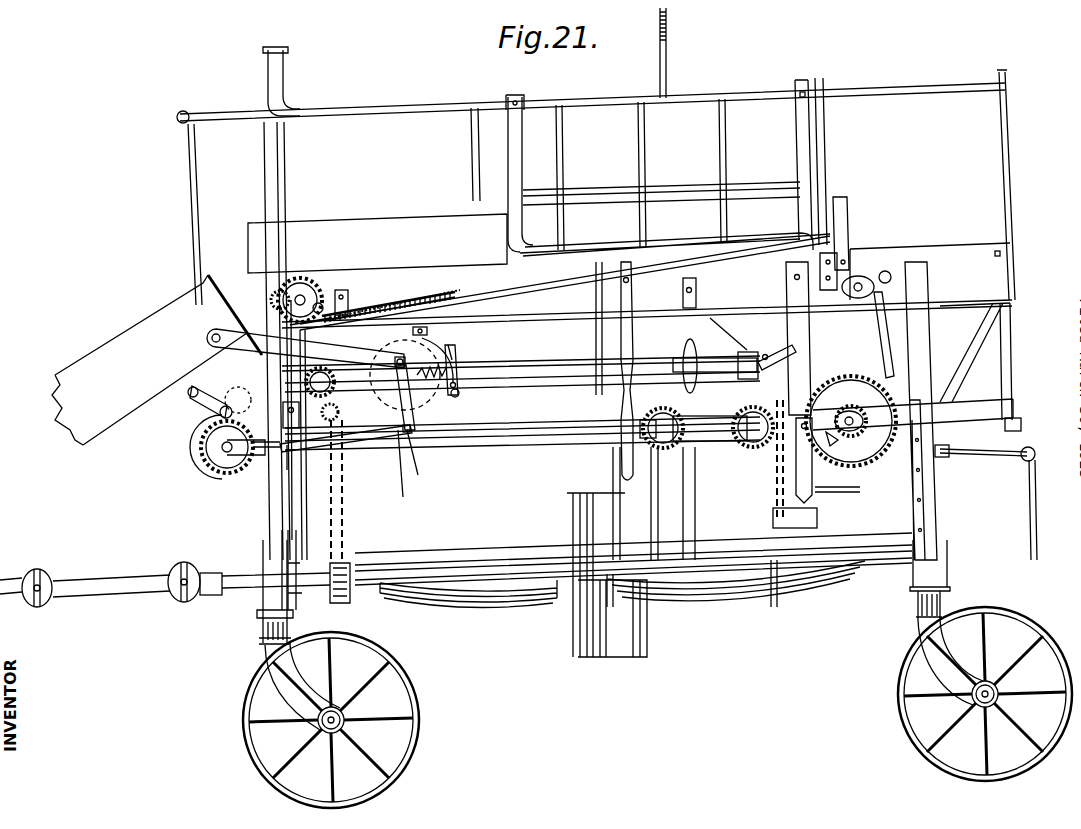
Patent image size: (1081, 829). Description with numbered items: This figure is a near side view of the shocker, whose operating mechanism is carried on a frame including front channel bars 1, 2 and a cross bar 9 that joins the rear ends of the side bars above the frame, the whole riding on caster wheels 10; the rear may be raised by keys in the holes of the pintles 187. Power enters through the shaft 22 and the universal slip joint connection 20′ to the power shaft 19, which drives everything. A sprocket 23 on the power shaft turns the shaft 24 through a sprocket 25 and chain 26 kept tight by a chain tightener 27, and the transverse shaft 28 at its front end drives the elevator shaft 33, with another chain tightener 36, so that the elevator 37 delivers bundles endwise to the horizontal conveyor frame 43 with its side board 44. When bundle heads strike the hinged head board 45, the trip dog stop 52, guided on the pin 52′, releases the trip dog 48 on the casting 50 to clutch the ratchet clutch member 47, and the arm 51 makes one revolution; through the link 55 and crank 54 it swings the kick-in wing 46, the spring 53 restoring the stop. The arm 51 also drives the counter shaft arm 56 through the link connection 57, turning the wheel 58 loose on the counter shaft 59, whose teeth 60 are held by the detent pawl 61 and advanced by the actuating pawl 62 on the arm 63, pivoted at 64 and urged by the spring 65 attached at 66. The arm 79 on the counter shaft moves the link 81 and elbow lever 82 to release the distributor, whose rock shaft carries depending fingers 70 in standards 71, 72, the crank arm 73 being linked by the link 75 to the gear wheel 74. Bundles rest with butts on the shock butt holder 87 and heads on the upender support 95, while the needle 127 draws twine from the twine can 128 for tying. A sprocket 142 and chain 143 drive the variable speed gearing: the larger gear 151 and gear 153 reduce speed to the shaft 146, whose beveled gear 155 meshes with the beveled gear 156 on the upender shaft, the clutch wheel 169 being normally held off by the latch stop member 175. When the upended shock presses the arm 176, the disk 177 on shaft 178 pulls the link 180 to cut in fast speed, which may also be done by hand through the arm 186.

The front channel bar 1 is at (292, 562).
The front channel bar 2 is at (290, 440).
The cross bar 9 is at (1016, 306).
The caster wheel 10 is at (415, 690).
The power shaft 19 is at (583, 565).
The universal slip joint connection 20′ is at (125, 592).
The shaft 22 is at (216, 596).
The sprocket 23 is at (352, 564).
The shaft 24 is at (425, 440).
The sprocket 25 is at (347, 455).
The chain 26 is at (344, 500).
The chain tightener 27 is at (776, 520).
The transverse shaft 28 is at (222, 448).
The elevator shaft 33 is at (210, 335).
The chain tightener 36 is at (192, 402).
The elevator 37 is at (80, 436).
The horizontal bundle conveyor frame 43 is at (872, 256).
The side board 44 is at (298, 228).
The hinged head board 45 is at (840, 222).
The kick-in wing 46 is at (523, 168).
The ratchet clutch member 47 is at (308, 294).
The trip dog 48 is at (324, 299).
The trip dog casting 50 is at (305, 322).
The arm 51 is at (290, 290).
The trip dog stop 52 is at (508, 284).
The pin 52′ is at (345, 300).
The spring 53 is at (430, 302).
The crank 54 is at (284, 70).
The link 55 is at (266, 76).
The counter shaft arm 56 is at (340, 400).
The link connection 57 is at (205, 278).
The wheel 58 is at (432, 420).
The counter shaft 59 is at (398, 370).
The teeth 60 is at (440, 410).
The detent pawl 61 is at (428, 333).
The actuating pawl 62 is at (455, 350).
The arm 63 is at (465, 395).
The pivot 64 is at (460, 384).
The spring 65 is at (450, 375).
The spring connection 66 is at (448, 362).
The depending fingers 70 is at (478, 178).
The standard 71 is at (1010, 150).
The standard 72 is at (264, 153).
The crank arm 73 is at (178, 118).
The gear wheel 74 is at (236, 395).
The link 75 is at (189, 160).
The arm 79 is at (414, 458).
The link or bar 81 is at (404, 470).
The elbow lever 82 is at (292, 462).
The shock butt holder 87 is at (718, 605).
The upender support 95 is at (480, 605).
The needle 127 is at (668, 48).
The twine can 128 is at (572, 528).
The sprocket 142 is at (773, 580).
The chain 143 is at (774, 487).
The shaft 146 is at (852, 432).
The larger gear 151 is at (750, 448).
The gear 153 is at (668, 450).
The beveled gear 155 is at (835, 450).
The beveled gear 156 is at (851, 432).
The clutch wheel 169 is at (840, 385).
The latch stop member 175 is at (842, 492).
The arm 176 is at (1037, 494).
The disk 177 is at (1035, 454).
The shaft 178 is at (1021, 427).
The link 180 is at (975, 457).
The arm 186 is at (886, 322).
The pintle 187 is at (932, 545).